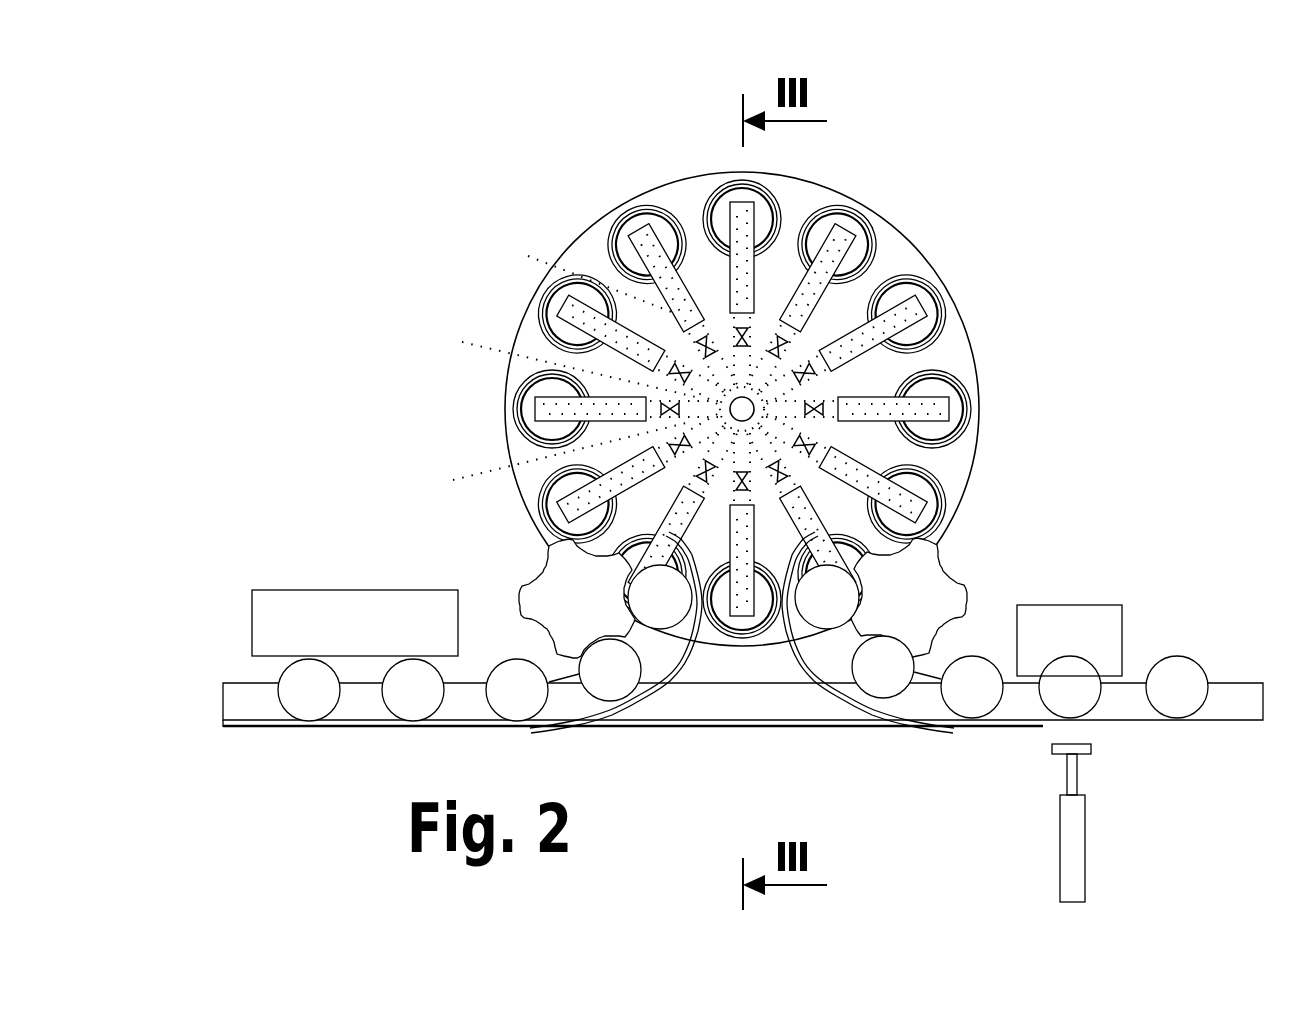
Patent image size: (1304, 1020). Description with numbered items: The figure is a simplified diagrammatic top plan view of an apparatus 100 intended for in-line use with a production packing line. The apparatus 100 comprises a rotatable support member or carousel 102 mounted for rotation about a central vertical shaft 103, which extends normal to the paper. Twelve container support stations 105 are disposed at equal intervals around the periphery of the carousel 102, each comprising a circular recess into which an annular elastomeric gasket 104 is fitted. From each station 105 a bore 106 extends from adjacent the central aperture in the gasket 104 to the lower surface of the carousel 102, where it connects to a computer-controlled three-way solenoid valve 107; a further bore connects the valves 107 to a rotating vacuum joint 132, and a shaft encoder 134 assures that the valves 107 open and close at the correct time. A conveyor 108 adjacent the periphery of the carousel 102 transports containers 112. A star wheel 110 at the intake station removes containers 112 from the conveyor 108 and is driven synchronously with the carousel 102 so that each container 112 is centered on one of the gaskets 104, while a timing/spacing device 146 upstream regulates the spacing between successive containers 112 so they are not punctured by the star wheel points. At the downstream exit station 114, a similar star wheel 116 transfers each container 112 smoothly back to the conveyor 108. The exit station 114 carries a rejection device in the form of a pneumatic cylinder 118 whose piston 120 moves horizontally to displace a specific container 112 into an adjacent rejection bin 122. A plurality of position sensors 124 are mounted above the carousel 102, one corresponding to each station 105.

The apparatus 100 is at (512, 325).
The carousel 102 is at (942, 356).
The central vertical shaft 103 is at (757, 413).
The annular elastomeric gasket 104 is at (748, 632).
The container support station 105 is at (627, 203).
The bore 106 is at (712, 275).
The three-way solenoid valve 107 is at (591, 281).
The conveyor 108 is at (676, 705).
The star wheel 110 is at (575, 610).
The container 112 is at (415, 690).
The exit station 114 is at (833, 650).
The star wheel 116 is at (932, 602).
The pneumatic cylinder 118 is at (1085, 858).
The piston 120 is at (1077, 773).
The rejection bin 122 is at (1093, 628).
The position sensor 124 is at (535, 412).
The rotating vacuum joint 132 is at (555, 359).
The shaft encoder 134 is at (543, 460).
The timing/spacing device 146 is at (380, 590).